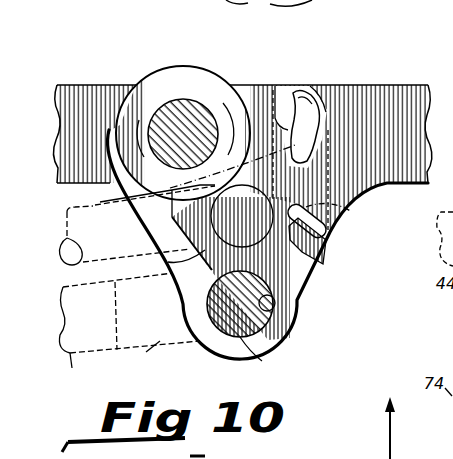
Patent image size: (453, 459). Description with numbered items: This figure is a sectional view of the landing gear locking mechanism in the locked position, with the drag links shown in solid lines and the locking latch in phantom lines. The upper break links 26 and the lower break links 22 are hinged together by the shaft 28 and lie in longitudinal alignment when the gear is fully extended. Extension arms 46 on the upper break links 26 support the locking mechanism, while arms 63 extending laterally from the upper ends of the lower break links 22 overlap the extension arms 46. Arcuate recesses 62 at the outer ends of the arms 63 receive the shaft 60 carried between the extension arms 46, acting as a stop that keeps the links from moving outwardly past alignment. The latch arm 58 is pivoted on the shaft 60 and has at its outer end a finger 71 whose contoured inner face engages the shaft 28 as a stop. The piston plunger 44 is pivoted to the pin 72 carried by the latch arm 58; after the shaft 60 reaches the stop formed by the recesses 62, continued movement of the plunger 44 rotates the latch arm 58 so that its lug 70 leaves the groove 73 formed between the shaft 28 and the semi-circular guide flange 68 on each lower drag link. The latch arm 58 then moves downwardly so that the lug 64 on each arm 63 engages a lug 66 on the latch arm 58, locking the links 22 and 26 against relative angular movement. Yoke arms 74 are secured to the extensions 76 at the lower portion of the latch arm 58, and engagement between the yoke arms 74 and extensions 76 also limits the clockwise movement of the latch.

The lower break links 22 is at (392, 84).
The upper break links 26 is at (68, 84).
The shaft 28 is at (199, 70).
The piston plunger 44 is at (93, 205).
The extension arms 46 is at (163, 268).
The latch arm 58 is at (274, 84).
The shaft 60 is at (258, 360).
The arcuate recesses 62 is at (268, 300).
The arms 63 is at (318, 272).
The lug 64 is at (321, 252).
The lugs 66 is at (345, 210).
The semi-circular guide flange 68 is at (150, 129).
The lug 70 is at (318, 87).
The finger 71 is at (298, 90).
The pin 72 is at (216, 264).
The groove 73 is at (229, 140).
The yoke arms 74 is at (72, 368).
The extensions 76 is at (146, 352).